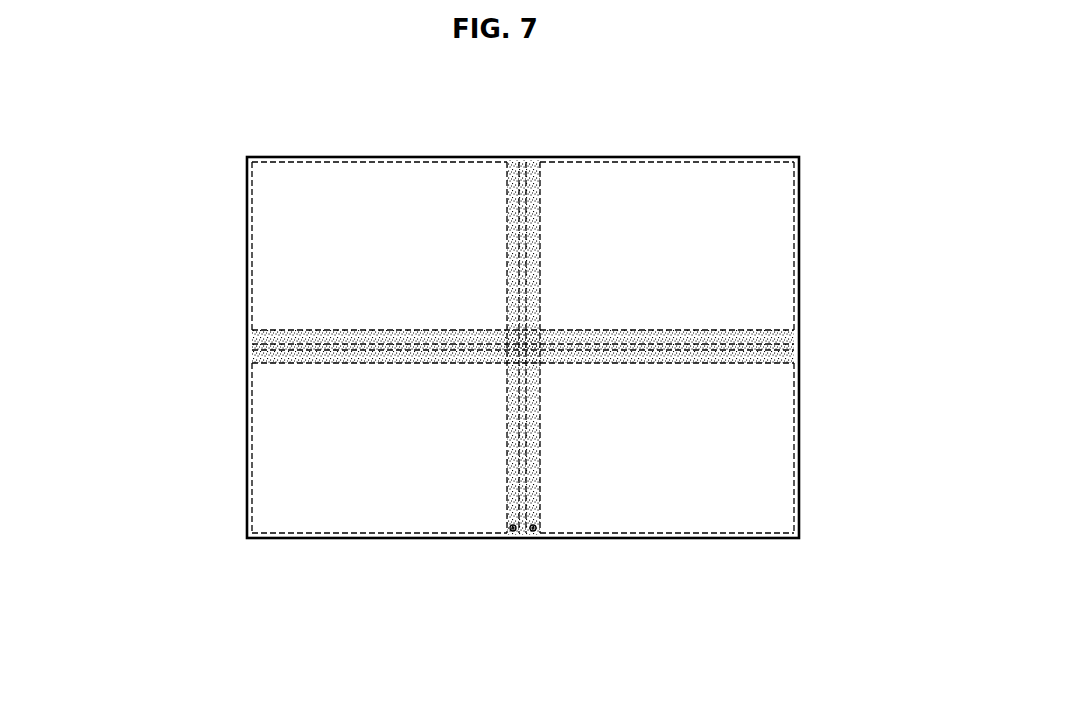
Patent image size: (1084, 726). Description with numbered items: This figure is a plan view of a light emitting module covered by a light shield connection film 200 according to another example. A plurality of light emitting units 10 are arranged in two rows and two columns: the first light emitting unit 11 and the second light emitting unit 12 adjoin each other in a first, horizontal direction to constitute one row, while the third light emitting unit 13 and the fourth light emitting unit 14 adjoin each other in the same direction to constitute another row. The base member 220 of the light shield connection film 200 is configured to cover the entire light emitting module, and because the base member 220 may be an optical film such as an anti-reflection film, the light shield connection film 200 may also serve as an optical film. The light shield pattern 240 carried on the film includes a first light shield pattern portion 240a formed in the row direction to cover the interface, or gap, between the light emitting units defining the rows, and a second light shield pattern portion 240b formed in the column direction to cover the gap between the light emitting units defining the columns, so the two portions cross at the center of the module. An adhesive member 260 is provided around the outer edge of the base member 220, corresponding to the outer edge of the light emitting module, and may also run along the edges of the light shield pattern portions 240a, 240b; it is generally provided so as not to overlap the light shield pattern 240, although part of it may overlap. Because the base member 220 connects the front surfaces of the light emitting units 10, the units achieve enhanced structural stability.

The light emitting units 10 is at (870, 215).
The first light emitting unit 11 is at (730, 219).
The second light emitting unit 12 is at (475, 205).
The third light emitting unit 13 is at (475, 404).
The fourth light emitting unit 14 is at (730, 387).
The light shield connection film 200 is at (106, 313).
The base member 220 is at (247, 399).
The light shield pattern 240 is at (157, 291).
The first light shield pattern portion 240a is at (293, 330).
The second light shield pattern portion 240b is at (505, 268).
The adhesive member 260 is at (247, 441).